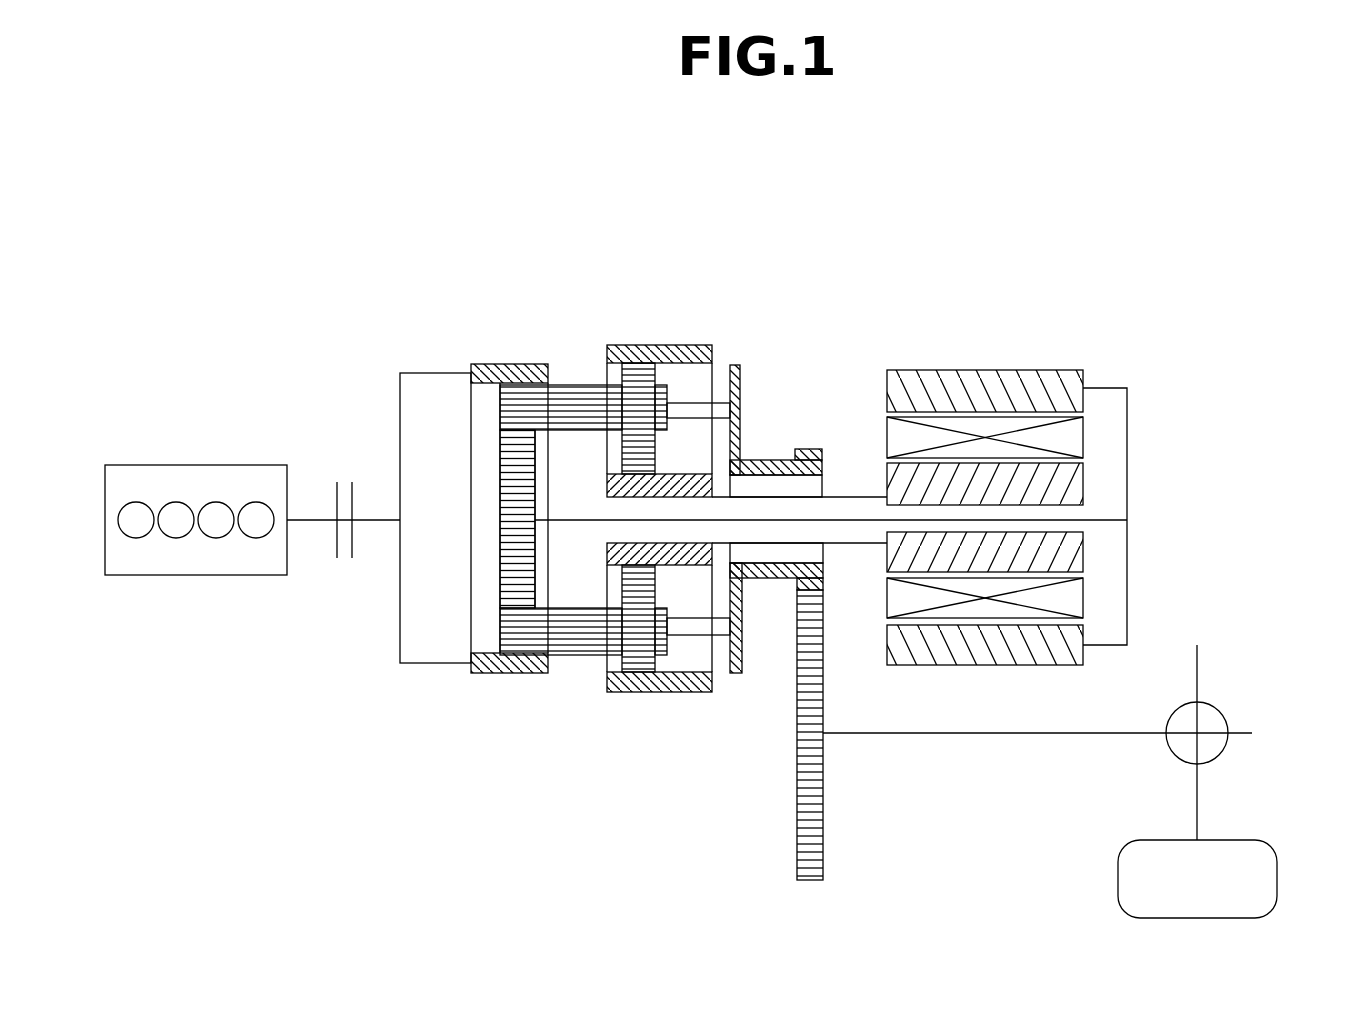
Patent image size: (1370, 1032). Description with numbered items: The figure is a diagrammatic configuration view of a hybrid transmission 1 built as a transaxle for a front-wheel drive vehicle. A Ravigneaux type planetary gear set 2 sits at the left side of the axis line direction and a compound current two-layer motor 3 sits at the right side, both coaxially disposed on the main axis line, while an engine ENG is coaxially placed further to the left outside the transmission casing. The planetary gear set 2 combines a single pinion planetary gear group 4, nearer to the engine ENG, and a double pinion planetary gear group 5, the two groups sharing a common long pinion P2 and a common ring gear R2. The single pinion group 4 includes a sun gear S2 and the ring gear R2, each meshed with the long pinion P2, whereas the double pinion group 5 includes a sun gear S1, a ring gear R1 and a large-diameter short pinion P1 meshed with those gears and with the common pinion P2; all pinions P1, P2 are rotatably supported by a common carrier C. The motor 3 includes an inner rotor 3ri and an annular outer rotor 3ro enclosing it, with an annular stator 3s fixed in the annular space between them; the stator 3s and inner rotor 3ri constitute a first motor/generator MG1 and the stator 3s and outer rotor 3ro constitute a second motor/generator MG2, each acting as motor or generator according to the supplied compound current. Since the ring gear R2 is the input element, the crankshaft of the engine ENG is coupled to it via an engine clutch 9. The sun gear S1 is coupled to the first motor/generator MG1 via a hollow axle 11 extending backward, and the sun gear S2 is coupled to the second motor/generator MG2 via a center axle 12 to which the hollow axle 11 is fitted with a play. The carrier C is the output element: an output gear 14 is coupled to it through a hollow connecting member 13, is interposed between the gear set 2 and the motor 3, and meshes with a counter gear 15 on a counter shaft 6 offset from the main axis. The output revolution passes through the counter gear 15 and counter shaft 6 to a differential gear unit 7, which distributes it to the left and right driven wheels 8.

The hybrid transmission 1 is at (711, 742).
The Ravigneaux type planetary gear set 2 is at (450, 182).
The compound current two-layer motor 3 is at (1105, 273).
The single pinion planetary gear group 4 is at (460, 273).
The double pinion planetary gear group 5 is at (570, 273).
The counter shaft 6 is at (1000, 737).
The differential gear unit 7 is at (1220, 710).
The driven wheels 8 is at (1118, 890).
The engine clutch 9 is at (347, 478).
The hollow axle 11 is at (763, 546).
The center axle 12 is at (846, 528).
The hollow connecting member 13 is at (770, 458).
The output gear 14 is at (823, 457).
The counter gear 15 is at (826, 801).
The outer rotor 3ro is at (1085, 380).
The annular stator 3s is at (1085, 440).
The inner rotor 3ri is at (1072, 485).
The carrier C is at (740, 440).
The sun gear S1 is at (683, 474).
The ring gear R1 is at (661, 345).
The large-diameter short pinion P1 is at (612, 380).
The sun gear S2 is at (505, 478).
The ring gear R2 is at (492, 676).
The long pinion P2 is at (566, 649).
The engine ENG is at (210, 463).
The first motor/generator MG1 is at (1217, 460).
The second motor/generator MG2 is at (1217, 368).